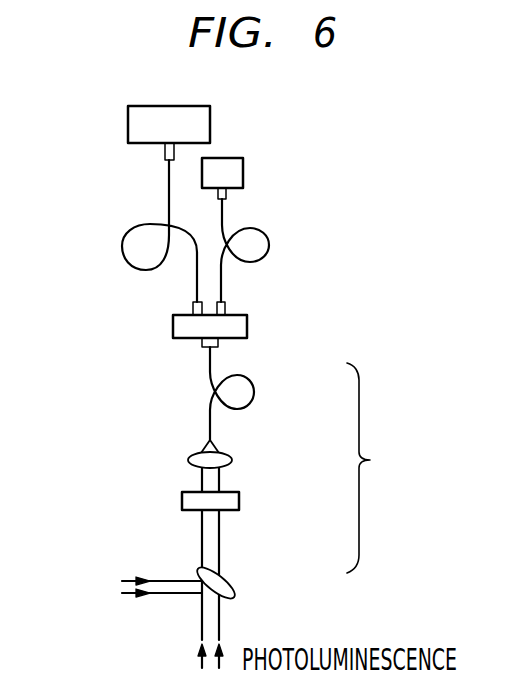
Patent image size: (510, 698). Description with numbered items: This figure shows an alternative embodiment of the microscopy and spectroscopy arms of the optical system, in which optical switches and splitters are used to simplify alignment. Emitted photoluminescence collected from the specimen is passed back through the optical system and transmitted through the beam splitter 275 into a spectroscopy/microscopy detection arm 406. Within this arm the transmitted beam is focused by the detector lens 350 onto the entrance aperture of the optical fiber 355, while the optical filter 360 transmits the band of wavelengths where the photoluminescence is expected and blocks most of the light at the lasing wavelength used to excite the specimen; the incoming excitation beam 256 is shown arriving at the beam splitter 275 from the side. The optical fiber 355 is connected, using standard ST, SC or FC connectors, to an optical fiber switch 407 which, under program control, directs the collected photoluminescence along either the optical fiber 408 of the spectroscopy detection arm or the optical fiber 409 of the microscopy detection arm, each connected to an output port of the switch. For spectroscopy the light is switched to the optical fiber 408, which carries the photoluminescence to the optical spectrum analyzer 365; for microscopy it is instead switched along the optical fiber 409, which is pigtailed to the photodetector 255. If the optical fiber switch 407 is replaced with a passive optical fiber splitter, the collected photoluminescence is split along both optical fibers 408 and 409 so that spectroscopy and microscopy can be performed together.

The optical spectrum analyzer 365 is at (128, 122).
The photodetector 255 is at (243, 176).
The optical fiber 408 is at (125, 240).
The optical fiber 409 is at (270, 247).
The optical fiber switch 407 is at (247, 326).
The optical fiber 355 is at (260, 392).
The detector lens 350 is at (232, 460).
The optical filter 360 is at (239, 502).
The excitation light beam 256 is at (133, 577).
The beam splitter 275 is at (237, 597).
The spectroscopy/microscopy detection arm 406 is at (380, 468).